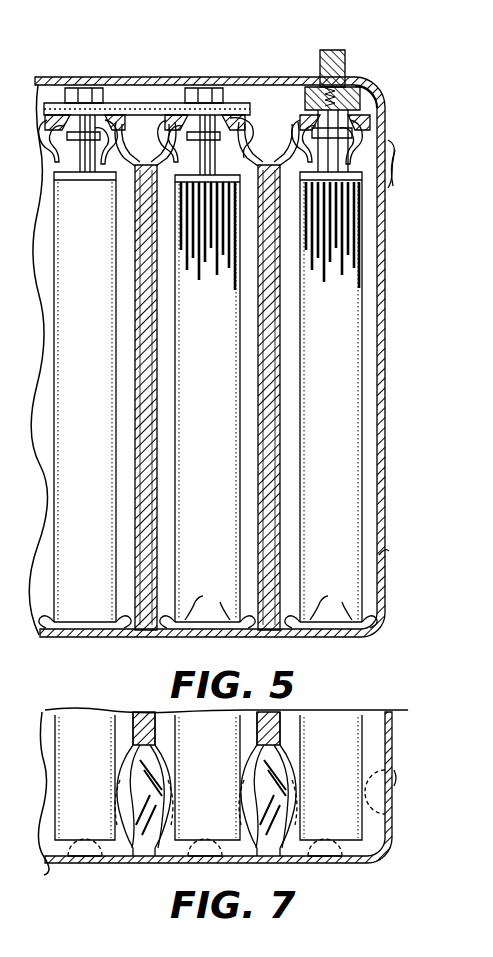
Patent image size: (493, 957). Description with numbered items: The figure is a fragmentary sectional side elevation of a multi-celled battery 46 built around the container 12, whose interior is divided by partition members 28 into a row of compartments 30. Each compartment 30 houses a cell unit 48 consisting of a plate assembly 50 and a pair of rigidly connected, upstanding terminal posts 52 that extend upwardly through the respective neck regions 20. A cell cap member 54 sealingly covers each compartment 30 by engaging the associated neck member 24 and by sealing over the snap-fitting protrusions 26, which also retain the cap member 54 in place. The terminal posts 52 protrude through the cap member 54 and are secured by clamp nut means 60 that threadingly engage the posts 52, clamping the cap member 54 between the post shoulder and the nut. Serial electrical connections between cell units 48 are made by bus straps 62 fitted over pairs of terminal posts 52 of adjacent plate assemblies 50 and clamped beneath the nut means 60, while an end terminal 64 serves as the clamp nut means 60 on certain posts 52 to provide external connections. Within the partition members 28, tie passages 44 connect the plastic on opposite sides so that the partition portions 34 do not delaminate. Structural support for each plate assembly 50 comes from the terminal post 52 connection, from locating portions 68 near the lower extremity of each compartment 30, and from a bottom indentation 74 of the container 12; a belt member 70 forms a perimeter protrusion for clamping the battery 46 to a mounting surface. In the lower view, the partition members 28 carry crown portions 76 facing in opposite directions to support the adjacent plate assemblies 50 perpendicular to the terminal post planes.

In FIG. 5, the container 12 is at (82, 642).
In FIG. 7, the container 12 is at (111, 864).
In FIG. 5, the neck region 20 is at (63, 169).
In FIG. 5, the neck member 24 is at (248, 117).
In FIG. 5, the snap-fitting protrusion 26 is at (248, 132).
In FIG. 5, the partition member 28 is at (158, 562).
In FIG. 7, the partition member 28 is at (135, 750).
In FIG. 5, the compartment 30 is at (166, 443).
In FIG. 5, the partition portion 34 is at (256, 347).
In FIG. 5, the tie passage 44 is at (274, 498).
In FIG. 5, the multi-celled battery 46 is at (96, 652).
In FIG. 5, the cell unit 48 is at (42, 426).
In FIG. 5, the plate assembly 50 is at (208, 397).
In FIG. 7, the plate assembly 50 is at (208, 777).
In FIG. 5, the terminal post 52 is at (66, 161).
In FIG. 5, the cell cap member 54 is at (43, 130).
In FIG. 5, the clamp nut means 60 is at (105, 82).
In FIG. 5, the bus strap 62 is at (232, 106).
In FIG. 5, the end terminal 64 is at (344, 65).
In FIG. 5, the locating portion 68 is at (208, 608).
In FIG. 5, the belt member 70 is at (390, 554).
In FIG. 7, the bottom indentation 74 is at (83, 866).
In FIG. 7, the crown portion 76 is at (170, 776).